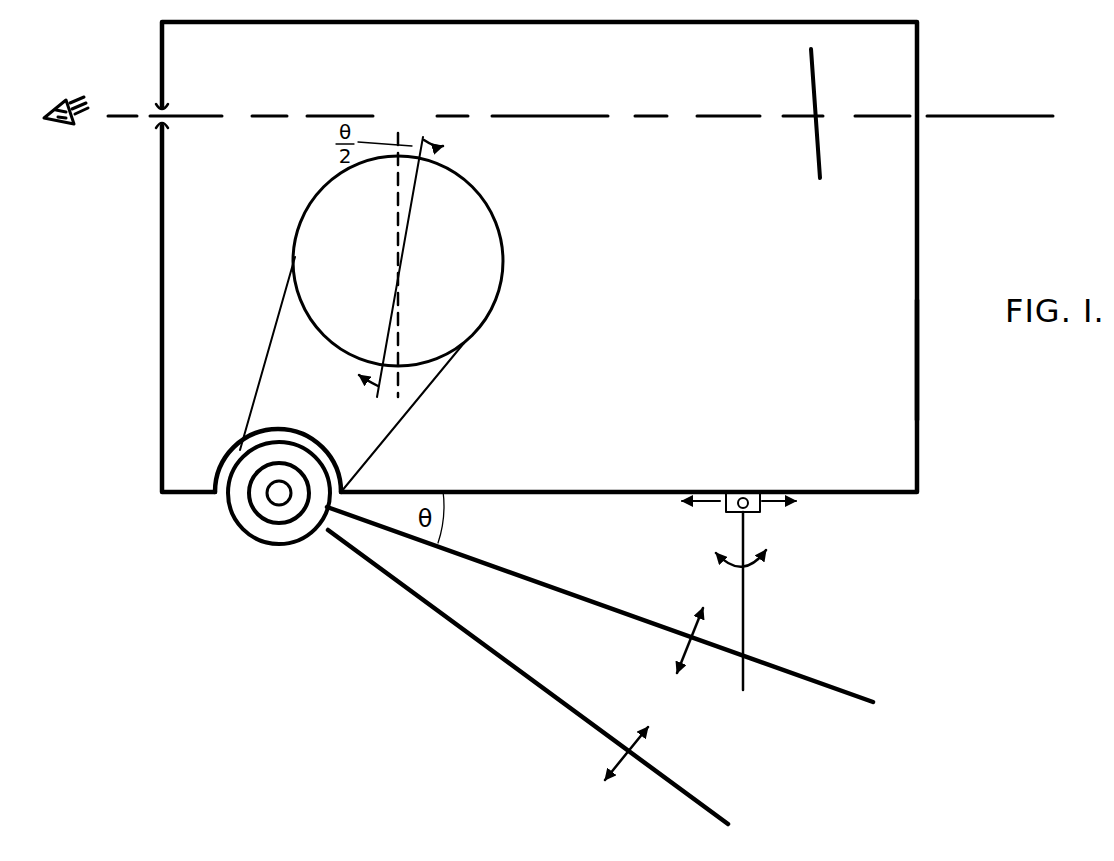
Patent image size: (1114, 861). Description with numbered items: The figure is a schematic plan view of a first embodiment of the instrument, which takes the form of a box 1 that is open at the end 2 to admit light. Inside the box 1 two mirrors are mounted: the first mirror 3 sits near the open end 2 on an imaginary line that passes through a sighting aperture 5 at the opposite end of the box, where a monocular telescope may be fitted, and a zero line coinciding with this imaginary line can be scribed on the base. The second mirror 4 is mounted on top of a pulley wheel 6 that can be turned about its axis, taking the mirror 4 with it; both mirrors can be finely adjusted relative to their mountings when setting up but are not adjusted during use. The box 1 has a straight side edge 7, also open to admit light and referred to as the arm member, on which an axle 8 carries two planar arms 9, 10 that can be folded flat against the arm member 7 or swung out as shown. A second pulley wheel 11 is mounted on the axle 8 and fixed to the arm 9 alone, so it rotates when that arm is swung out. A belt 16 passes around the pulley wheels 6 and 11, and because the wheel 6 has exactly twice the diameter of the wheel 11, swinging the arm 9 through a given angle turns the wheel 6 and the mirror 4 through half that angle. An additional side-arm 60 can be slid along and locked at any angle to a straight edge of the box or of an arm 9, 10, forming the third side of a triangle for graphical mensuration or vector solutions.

The box 1 is at (902, 271).
The open end 2 is at (918, 358).
The first mirror 3 is at (815, 70).
The second mirror 4 is at (413, 198).
The sighting aperture 5 is at (154, 121).
The pulley wheel 6 is at (478, 295).
The straight side edge 7 is at (815, 493).
The axle 8 is at (276, 494).
The planar arm 9 is at (860, 692).
The planar arm 10 is at (723, 817).
The second pulley wheel 11 is at (287, 528).
The belt 16 is at (395, 430).
The side-arm 60 is at (751, 611).